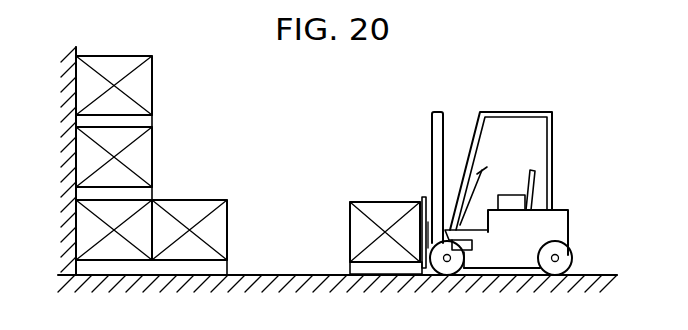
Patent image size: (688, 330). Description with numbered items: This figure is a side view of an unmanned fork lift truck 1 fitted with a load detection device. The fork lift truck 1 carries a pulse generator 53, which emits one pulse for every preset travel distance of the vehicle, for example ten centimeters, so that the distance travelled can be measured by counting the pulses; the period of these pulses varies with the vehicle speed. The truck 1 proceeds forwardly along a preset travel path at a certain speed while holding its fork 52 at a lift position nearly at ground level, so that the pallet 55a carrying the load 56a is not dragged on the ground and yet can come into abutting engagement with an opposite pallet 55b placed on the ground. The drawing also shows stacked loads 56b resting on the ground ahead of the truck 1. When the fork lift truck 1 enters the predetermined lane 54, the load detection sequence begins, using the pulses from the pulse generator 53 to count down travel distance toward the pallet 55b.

The fork lift truck 1 is at (473, 187).
The fork 52 is at (404, 167).
The pulse generator 53 is at (471, 254).
The lane 54 is at (344, 321).
The pallet 55a is at (352, 266).
The opposite pallet 55b is at (227, 268).
The load 56a is at (367, 201).
The stacked loads 56b is at (227, 229).